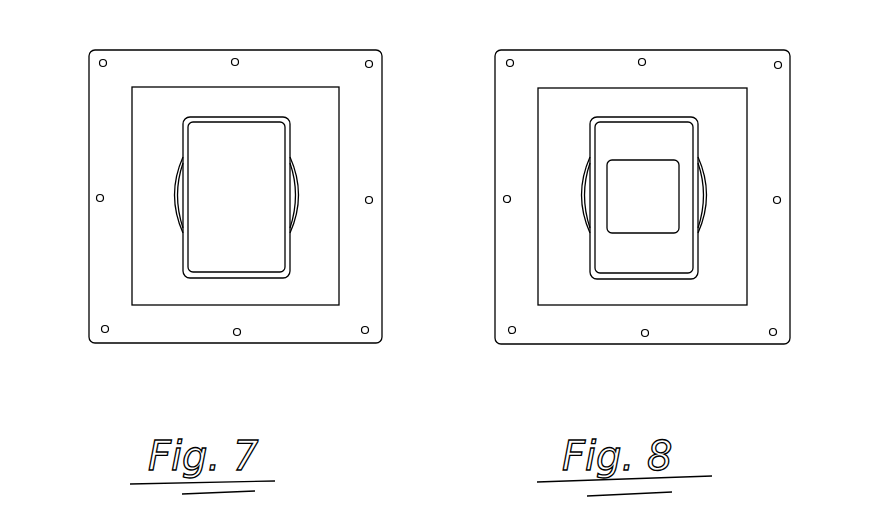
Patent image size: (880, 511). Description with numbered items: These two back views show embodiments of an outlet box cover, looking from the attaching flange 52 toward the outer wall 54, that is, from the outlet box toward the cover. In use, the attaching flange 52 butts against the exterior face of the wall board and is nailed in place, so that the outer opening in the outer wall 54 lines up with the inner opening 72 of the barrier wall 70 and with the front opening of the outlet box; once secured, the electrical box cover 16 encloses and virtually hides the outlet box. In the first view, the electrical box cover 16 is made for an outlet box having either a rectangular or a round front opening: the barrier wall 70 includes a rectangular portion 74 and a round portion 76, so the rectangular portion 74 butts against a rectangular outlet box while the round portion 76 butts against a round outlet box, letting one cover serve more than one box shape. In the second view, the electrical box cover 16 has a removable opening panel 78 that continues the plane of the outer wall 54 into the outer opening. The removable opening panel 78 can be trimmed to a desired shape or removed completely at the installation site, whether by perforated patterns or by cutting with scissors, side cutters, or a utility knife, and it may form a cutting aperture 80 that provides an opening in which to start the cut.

In FIG. 7, the electrical box cover 16 is at (390, 41).
In FIG. 8, the electrical box cover 16 is at (785, 38).
In FIG. 7, the attaching flange 52 is at (100, 100).
In FIG. 8, the attaching flange 52 is at (510, 102).
In FIG. 7, the outer wall 54 is at (148, 143).
In FIG. 8, the outer wall 54 is at (565, 133).
In FIG. 7, the barrier wall 70 is at (179, 292).
In FIG. 8, the barrier wall 70 is at (588, 292).
In FIG. 7, the inner opening 72 is at (253, 252).
In FIG. 7, the rectangular portion 74 is at (186, 252).
In FIG. 8, the rectangular portion 74 is at (590, 253).
In FIG. 7, the round portion 76 is at (172, 210).
In FIG. 8, the round portion 76 is at (580, 208).
In FIG. 8, the removable opening panel 78 is at (653, 258).
In FIG. 8, the cutting aperture 80 is at (647, 213).